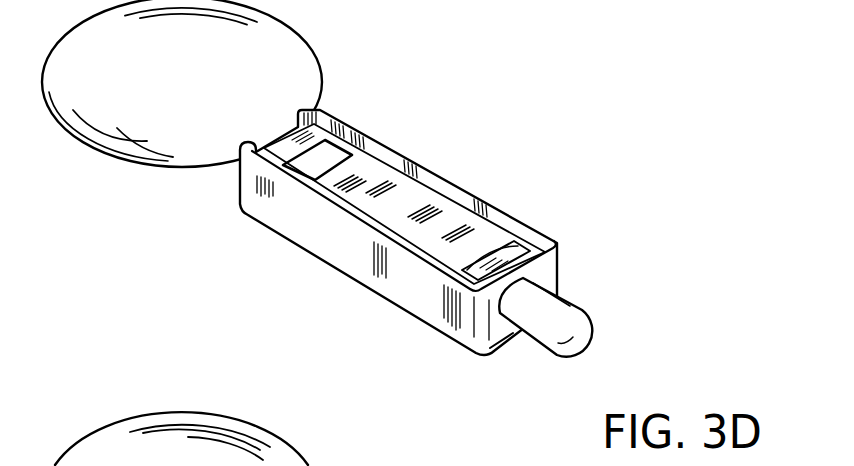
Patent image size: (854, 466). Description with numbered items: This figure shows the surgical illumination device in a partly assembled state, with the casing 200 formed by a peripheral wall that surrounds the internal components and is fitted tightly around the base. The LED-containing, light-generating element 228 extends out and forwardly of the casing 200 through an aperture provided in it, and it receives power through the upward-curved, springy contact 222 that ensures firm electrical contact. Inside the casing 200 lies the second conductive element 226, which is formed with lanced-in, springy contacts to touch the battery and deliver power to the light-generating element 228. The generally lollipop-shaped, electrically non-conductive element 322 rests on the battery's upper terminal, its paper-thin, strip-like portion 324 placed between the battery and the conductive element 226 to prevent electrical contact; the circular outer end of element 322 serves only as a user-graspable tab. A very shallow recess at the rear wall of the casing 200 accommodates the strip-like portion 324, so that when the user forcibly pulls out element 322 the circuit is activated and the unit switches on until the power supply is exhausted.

The electrically non-conductive element 322 is at (273, 52).
The casing 200 is at (340, 237).
The strip-like portion 324 is at (327, 157).
The second conductive element 226 is at (435, 205).
The contact 222 is at (510, 247).
The light-generating element 228 is at (562, 327).